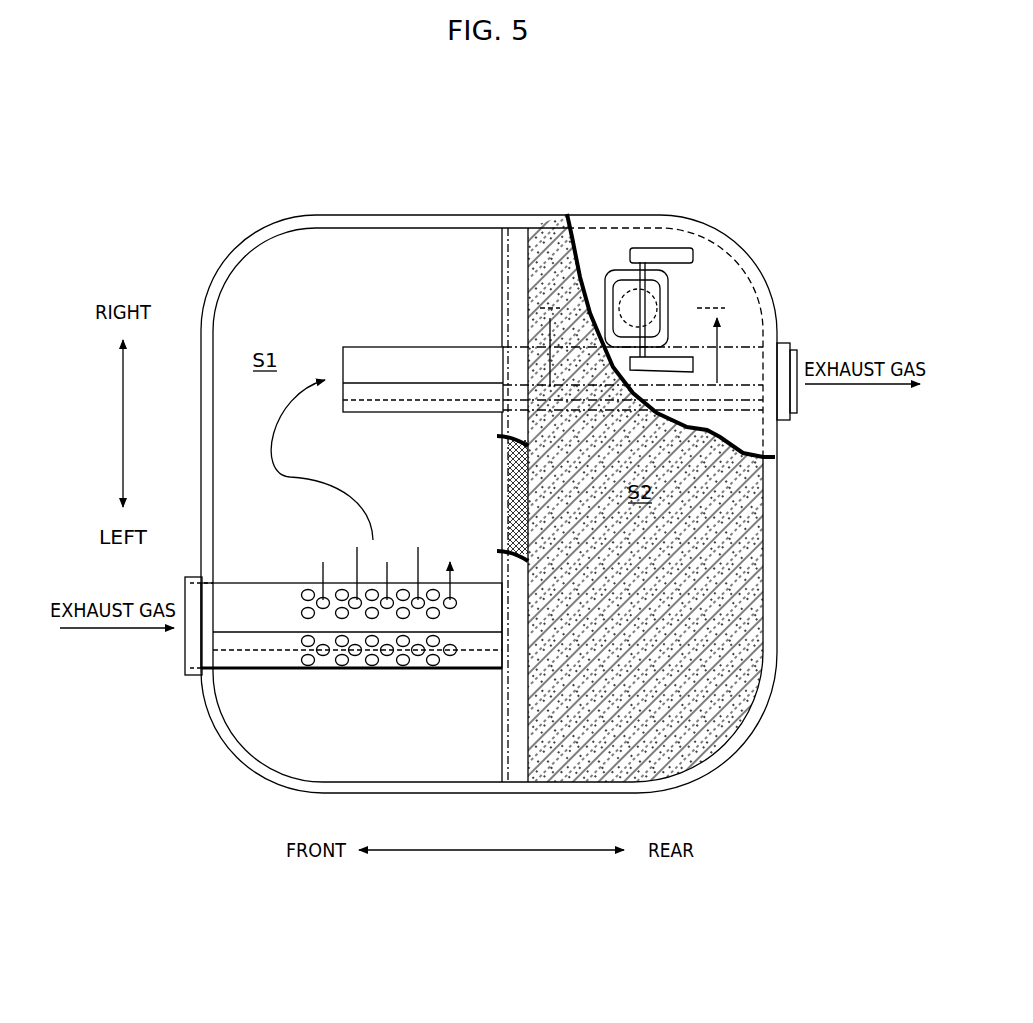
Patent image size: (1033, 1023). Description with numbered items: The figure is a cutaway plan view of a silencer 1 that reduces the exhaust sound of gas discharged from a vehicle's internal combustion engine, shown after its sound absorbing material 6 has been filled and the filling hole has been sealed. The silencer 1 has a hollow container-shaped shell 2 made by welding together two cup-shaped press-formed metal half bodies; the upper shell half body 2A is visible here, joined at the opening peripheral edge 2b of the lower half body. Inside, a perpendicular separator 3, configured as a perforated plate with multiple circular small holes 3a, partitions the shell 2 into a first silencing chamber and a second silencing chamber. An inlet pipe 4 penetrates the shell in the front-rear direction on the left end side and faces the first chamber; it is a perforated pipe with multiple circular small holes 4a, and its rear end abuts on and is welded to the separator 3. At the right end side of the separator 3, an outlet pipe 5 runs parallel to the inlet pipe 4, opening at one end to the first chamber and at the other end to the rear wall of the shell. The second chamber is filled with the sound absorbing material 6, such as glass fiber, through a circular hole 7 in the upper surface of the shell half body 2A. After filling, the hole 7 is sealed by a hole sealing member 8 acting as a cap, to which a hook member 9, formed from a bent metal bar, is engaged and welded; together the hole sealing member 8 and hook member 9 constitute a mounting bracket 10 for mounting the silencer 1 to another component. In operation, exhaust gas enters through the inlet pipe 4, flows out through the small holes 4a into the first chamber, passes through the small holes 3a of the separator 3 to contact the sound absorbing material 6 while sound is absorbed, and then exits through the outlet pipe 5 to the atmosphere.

The silencer 1 is at (655, 190).
The shell 2 is at (782, 542).
The shell half body 2A is at (731, 292).
The opening peripheral edge 2b is at (706, 768).
The separator 3 is at (500, 318).
The small holes 3a is at (505, 535).
The inlet pipe 4 is at (295, 672).
The small holes 4a is at (420, 650).
The outlet pipe 5 is at (483, 412).
The sound absorbing material 6 is at (757, 590).
The hole 7 is at (700, 292).
The hole sealing member 8 is at (614, 283).
The hook member 9 is at (667, 250).
The mounting bracket 10 is at (688, 272).